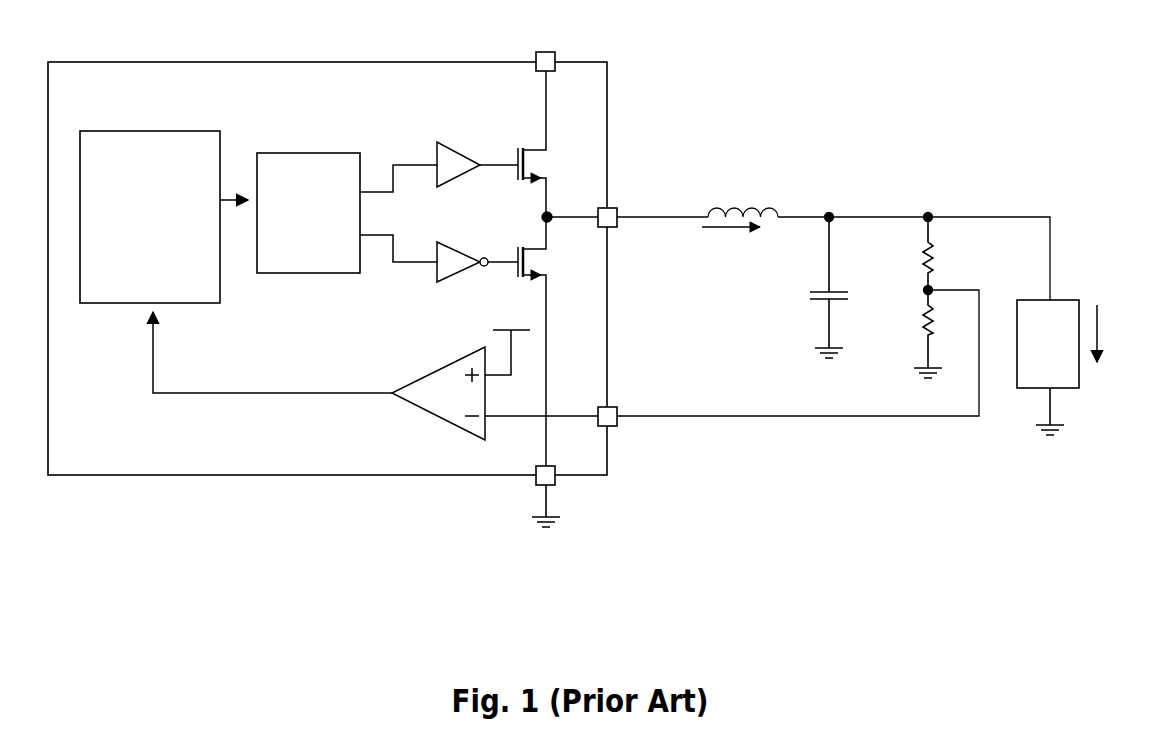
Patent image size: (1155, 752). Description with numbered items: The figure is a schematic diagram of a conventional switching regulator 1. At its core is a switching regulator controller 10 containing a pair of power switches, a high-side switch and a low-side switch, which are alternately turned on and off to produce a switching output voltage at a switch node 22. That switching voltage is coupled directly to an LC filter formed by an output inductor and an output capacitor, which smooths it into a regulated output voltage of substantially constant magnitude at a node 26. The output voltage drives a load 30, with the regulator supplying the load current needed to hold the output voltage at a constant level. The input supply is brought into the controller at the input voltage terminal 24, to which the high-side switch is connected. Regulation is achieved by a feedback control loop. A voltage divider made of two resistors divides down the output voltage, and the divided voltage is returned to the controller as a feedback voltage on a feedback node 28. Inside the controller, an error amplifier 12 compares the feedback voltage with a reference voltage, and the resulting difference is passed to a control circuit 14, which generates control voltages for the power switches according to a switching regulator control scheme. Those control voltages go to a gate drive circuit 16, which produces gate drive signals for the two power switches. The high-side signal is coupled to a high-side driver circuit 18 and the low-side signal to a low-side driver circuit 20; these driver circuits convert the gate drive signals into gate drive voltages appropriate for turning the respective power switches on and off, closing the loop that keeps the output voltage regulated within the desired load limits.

The switching regulator 1 is at (883, 112).
The switching regulator controller 10 is at (405, 62).
The error amplifier 12 is at (447, 421).
The control circuit 14 is at (150, 217).
The gate drive circuit 16 is at (280, 274).
The high-side driver circuit 18 is at (456, 148).
The low-side driver circuit 20 is at (458, 248).
The switch node 22 is at (551, 214).
The input voltage VIN pin 24 is at (556, 65).
The node 26 is at (829, 213).
The feedback node 28 is at (693, 420).
The load 30 is at (1072, 300).